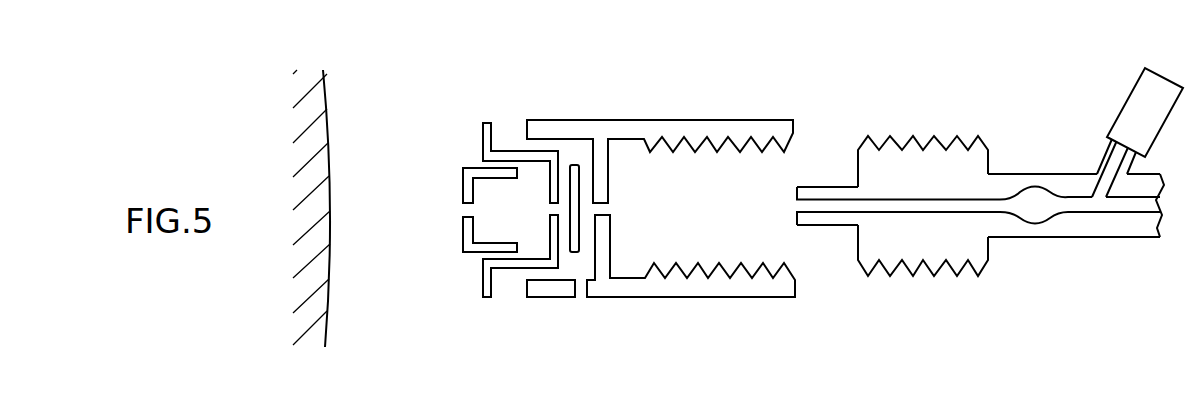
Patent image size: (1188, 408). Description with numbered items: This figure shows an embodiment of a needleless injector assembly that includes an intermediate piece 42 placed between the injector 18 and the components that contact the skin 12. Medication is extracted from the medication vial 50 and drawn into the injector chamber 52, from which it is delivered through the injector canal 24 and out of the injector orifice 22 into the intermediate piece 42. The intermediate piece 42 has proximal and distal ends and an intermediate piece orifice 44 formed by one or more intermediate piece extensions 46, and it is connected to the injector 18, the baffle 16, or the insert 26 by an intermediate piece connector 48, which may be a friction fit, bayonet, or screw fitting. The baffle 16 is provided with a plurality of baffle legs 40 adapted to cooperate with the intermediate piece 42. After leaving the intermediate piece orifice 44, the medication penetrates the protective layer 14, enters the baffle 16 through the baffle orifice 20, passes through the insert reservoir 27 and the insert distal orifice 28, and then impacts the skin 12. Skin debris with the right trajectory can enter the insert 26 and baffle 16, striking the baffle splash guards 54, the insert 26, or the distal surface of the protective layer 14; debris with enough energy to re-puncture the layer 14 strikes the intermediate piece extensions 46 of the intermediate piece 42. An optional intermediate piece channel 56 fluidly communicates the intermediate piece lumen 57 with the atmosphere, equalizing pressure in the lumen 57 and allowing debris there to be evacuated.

The skin 12 is at (330, 113).
The protective layer 14 is at (575, 165).
The baffle 16 is at (510, 270).
The injector 18 is at (1007, 237).
The baffle orifice 20 is at (545, 210).
The injector orifice 22 is at (800, 207).
The injector canal 24 is at (906, 207).
The insert 26 is at (467, 170).
The insert reservoir 27 is at (488, 227).
The insert distal orifice 28 is at (463, 212).
The baffle legs 40 is at (486, 297).
The intermediate piece 42 is at (720, 297).
The intermediate piece orifice 44 is at (605, 280).
The intermediate piece extensions 46 is at (607, 163).
The intermediate piece connector 48 is at (787, 273).
The medication vial 50 is at (1122, 102).
The injector chamber 52 is at (1048, 212).
The baffle splash guards 54 is at (550, 245).
The intermediate piece channel 56 is at (582, 298).
The intermediate piece lumen 57 is at (588, 148).